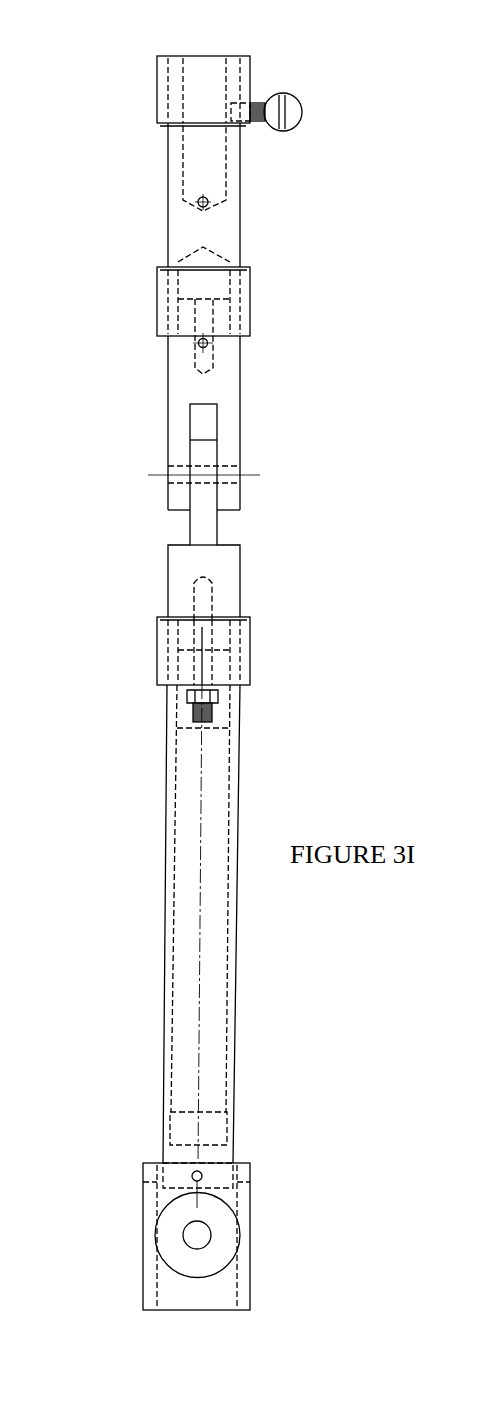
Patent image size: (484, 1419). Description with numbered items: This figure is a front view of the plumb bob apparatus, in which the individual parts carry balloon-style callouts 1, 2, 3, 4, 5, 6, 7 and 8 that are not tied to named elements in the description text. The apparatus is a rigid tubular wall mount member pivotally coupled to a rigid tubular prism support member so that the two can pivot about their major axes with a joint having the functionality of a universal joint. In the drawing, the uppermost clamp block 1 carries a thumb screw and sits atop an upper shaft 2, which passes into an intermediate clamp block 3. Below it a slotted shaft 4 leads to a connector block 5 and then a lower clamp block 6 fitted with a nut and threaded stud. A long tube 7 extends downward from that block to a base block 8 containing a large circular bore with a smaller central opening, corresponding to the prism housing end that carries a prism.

The top clamp block with thumb screw 1 is at (150, 82).
The upper shaft 2 is at (160, 206).
The intermediate clamp block 3 is at (149, 294).
The slotted shaft 4 is at (160, 416).
The connector block 5 is at (160, 576).
The lower clamp block 6 is at (149, 656).
The tube 7 is at (157, 939).
The base block 8 is at (135, 1194).